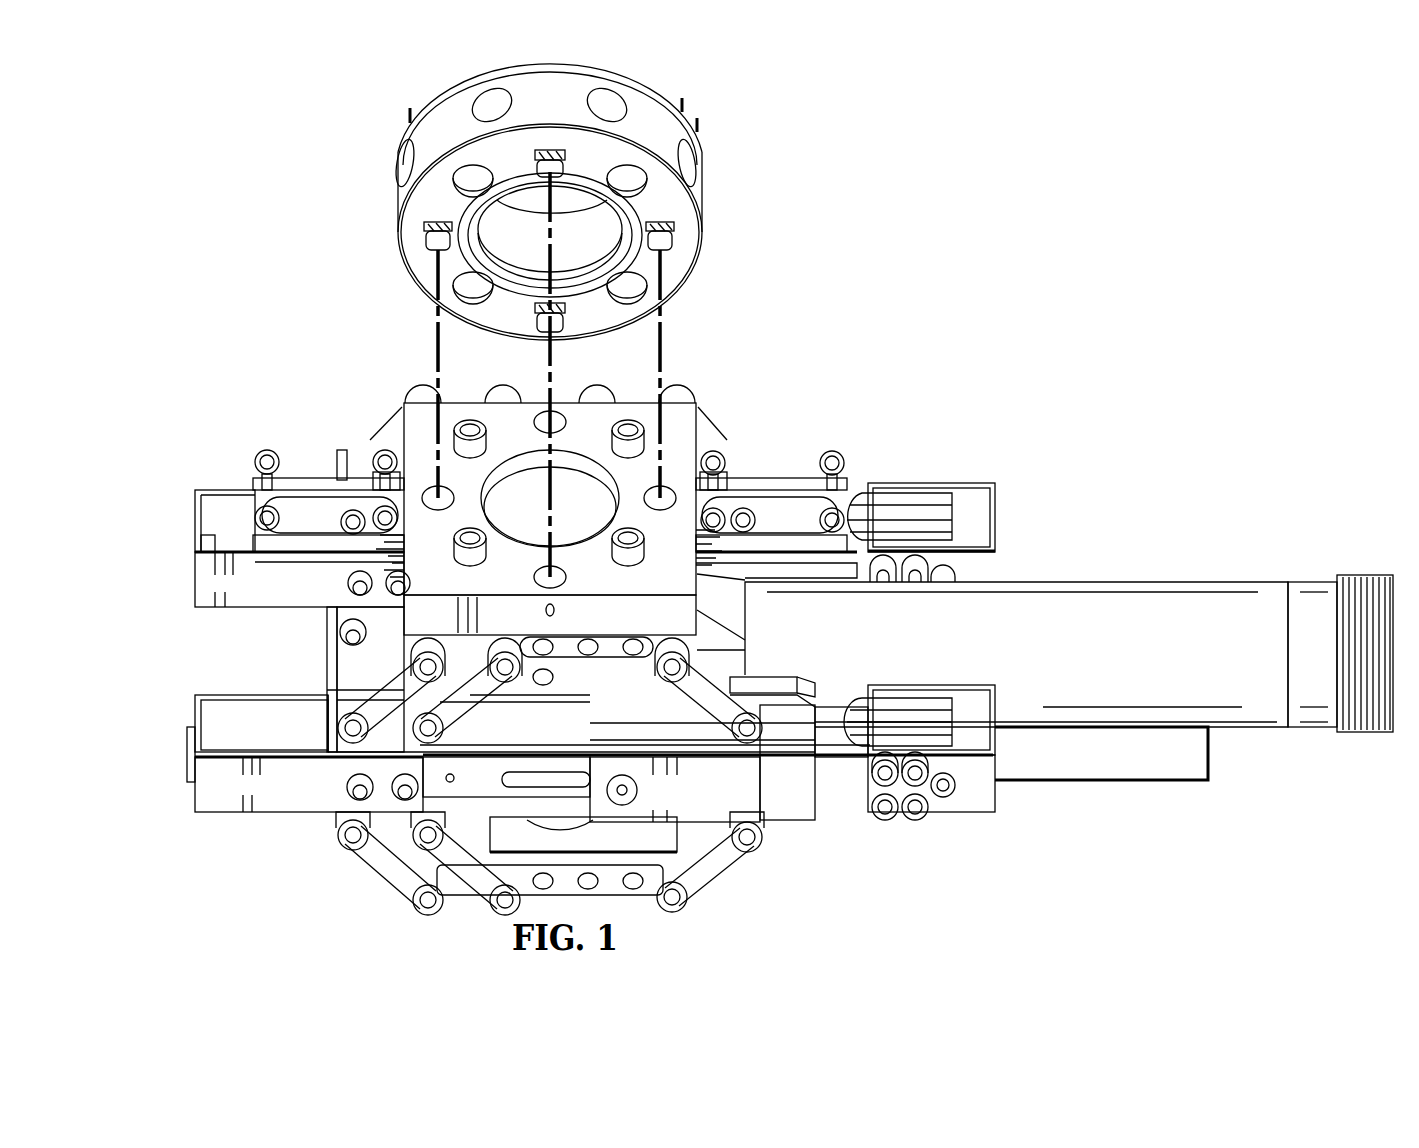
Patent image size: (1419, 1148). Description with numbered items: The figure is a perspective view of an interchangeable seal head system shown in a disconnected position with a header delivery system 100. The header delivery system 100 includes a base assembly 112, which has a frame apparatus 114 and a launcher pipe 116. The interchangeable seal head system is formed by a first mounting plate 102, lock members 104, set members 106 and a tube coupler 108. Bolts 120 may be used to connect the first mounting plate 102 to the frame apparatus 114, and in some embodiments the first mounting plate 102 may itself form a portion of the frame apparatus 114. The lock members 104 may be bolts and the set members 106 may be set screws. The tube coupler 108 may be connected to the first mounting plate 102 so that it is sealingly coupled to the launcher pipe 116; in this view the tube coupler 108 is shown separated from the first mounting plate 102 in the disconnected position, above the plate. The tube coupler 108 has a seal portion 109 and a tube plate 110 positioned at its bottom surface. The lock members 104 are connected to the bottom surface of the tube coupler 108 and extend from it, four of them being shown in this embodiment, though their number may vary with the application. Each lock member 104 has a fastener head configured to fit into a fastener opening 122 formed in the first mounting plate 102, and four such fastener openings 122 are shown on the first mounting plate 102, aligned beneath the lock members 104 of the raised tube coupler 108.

The header delivery system 100 is at (216, 193).
The first mounting plate 102 is at (425, 413).
The lock members 104 is at (425, 252).
The set members 106 is at (540, 400).
The tube coupler 108 is at (555, 202).
The seal portion 109 is at (398, 137).
The tube plate 110 is at (398, 195).
The base assembly 112 is at (810, 487).
The frame apparatus 114 is at (193, 513).
The launcher pipe 116 is at (1117, 580).
The bolts 120 is at (847, 457).
The fastener openings 122 is at (560, 403).